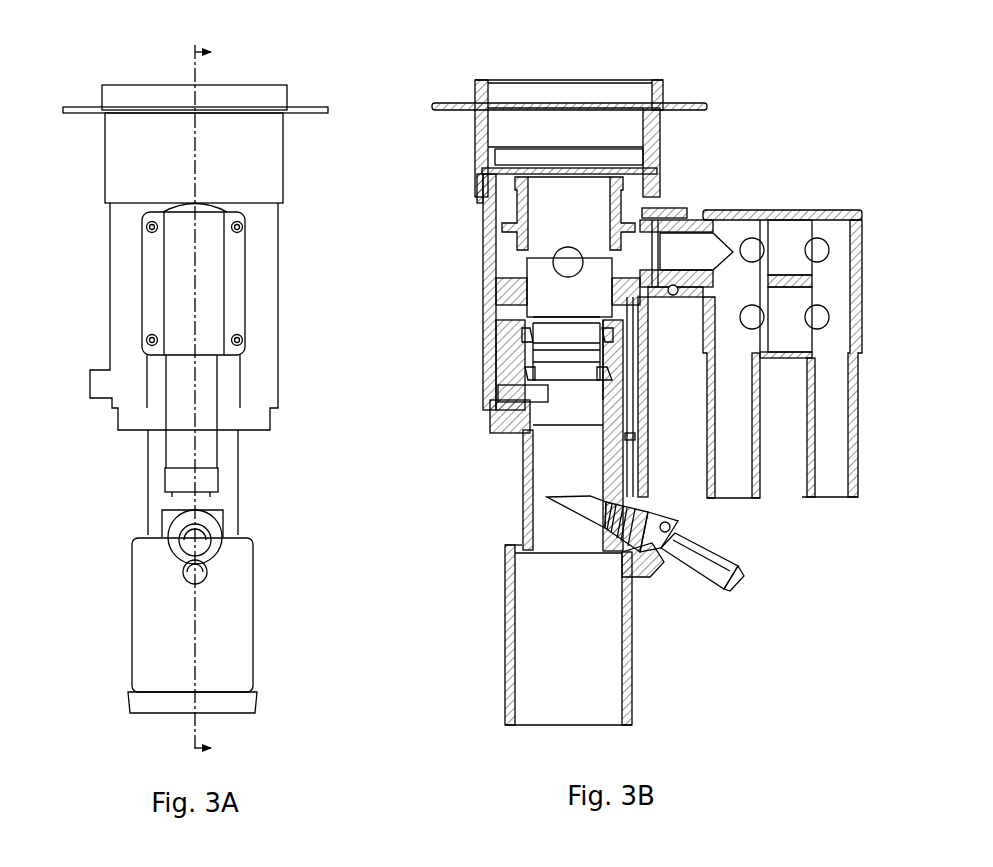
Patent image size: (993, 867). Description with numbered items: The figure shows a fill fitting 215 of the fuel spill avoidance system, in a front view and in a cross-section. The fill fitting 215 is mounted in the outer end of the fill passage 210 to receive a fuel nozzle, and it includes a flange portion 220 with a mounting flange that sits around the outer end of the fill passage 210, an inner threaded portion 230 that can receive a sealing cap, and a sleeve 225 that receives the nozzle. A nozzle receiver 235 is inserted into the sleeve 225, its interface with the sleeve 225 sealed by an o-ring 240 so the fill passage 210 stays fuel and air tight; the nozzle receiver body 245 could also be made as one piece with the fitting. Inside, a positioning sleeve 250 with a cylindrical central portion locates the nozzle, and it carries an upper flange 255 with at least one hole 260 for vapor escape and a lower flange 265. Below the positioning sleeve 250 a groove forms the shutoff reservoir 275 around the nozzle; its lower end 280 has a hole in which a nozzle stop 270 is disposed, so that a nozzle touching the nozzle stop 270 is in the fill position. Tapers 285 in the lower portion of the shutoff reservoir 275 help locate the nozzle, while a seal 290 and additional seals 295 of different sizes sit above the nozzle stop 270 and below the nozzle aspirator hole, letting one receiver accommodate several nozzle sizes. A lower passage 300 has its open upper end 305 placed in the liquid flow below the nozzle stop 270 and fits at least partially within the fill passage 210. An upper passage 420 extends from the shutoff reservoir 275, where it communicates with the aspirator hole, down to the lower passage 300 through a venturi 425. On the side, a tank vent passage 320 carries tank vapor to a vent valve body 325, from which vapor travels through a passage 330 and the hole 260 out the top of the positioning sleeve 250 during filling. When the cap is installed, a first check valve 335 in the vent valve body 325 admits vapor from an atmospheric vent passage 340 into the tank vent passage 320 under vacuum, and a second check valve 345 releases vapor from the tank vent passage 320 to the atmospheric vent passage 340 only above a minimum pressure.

In FIG. 3A, the fill fitting 215 is at (65, 260).
In FIG. 3B, the fill fitting 215 is at (684, 371).
In FIG. 3B, the fill passage 210 is at (520, 678).
In FIG. 3B, the flange portion 220 is at (683, 106).
In FIG. 3B, the sleeve 225 is at (490, 229).
In FIG. 3B, the inner threaded portion 230 is at (497, 128).
In FIG. 3B, the nozzle receiver 235 is at (520, 341).
In FIG. 3B, the o-ring 240 is at (480, 170).
In FIG. 3B, the nozzle receiver body 245 is at (540, 440).
In FIG. 3B, the positioning sleeve 250 is at (528, 211).
In FIG. 3B, the upper flange 255 is at (658, 155).
In FIG. 3B, the hole 260 is at (517, 182).
In FIG. 3B, the lower flange 265 is at (498, 310).
In FIG. 3B, the nozzle stop 270 is at (540, 393).
In FIG. 3B, the shutoff reservoir 275 is at (569, 282).
In FIG. 3B, the lower end of the shutoff reservoir 280 is at (545, 413).
In FIG. 3B, the tapers 285 is at (517, 355).
In FIG. 3B, the seal 290 is at (517, 373).
In FIG. 3B, the additional seals 295 is at (508, 342).
In FIG. 3B, the lower passage 300 is at (693, 568).
In FIG. 3B, the open upper end 305 is at (575, 503).
In FIG. 3B, the tank vent passage 320 is at (735, 484).
In FIG. 3B, the vent valve body 325 is at (842, 340).
In FIG. 3B, the passage 330 is at (690, 250).
In FIG. 3B, the first check valve 335 is at (783, 220).
In FIG. 3B, the atmospheric vent passage 340 is at (838, 415).
In FIG. 3B, the second check valve 345 is at (792, 332).
In FIG. 3B, the upper passage 420 is at (641, 461).
In FIG. 3B, the venturi 425 is at (648, 522).